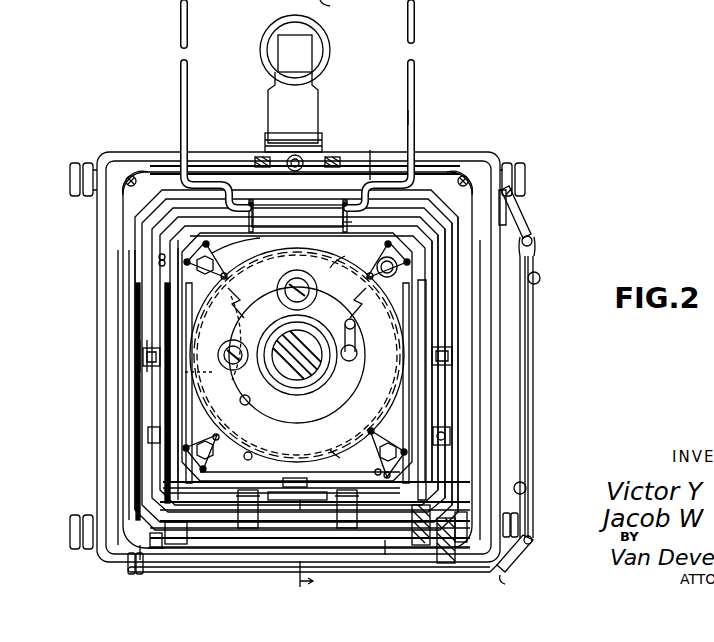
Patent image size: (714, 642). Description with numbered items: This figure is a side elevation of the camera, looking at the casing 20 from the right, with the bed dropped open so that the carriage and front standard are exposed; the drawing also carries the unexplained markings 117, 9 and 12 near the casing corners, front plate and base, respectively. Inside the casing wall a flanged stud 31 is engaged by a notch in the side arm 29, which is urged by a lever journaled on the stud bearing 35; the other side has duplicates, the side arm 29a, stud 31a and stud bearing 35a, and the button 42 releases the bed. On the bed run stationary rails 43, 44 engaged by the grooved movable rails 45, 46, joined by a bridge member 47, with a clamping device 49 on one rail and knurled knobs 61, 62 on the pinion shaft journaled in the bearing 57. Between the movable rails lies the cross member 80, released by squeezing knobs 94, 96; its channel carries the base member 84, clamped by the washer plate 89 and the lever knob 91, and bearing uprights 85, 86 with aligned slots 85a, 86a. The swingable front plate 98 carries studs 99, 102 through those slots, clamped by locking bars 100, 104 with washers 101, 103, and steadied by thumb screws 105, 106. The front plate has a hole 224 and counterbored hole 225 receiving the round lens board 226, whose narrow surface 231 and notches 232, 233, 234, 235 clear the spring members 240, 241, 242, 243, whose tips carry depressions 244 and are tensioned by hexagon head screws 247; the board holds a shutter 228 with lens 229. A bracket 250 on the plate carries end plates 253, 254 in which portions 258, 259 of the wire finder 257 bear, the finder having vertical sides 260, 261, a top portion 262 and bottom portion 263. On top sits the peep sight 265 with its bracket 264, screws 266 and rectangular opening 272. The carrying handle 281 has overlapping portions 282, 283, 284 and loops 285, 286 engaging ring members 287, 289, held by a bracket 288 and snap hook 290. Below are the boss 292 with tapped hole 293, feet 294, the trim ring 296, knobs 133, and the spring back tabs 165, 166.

The camera casing 20 is at (131, 153).
The screw 117 is at (134, 178).
The metallic knobs 133 is at (75, 165).
The extended web or tab 165 is at (100, 303).
The extended web or tab 166 is at (98, 443).
The plate 9 is at (372, 295).
The depressions 244 is at (252, 317).
The notch 232 is at (290, 263).
The lens 229 is at (332, 373).
The hexagon head screws 247 is at (236, 307).
The shutter 228 is at (357, 328).
The notch 233 is at (358, 353).
The notch 235 is at (244, 399).
The slot 85a is at (206, 379).
The round lens board 226 is at (331, 269).
The spring member 240 is at (213, 255).
The notch 234 is at (340, 459).
The narrow surface 231 is at (214, 285).
The spring member 241 is at (404, 281).
The spring member 243 is at (195, 442).
The hole 224 is at (381, 446).
The counterbored hole 225 is at (247, 458).
The spring member 242 is at (375, 472).
The round end plate 253 is at (262, 225).
The round end plate 254 is at (352, 224).
The button 42 is at (287, 161).
The bracket 250 is at (306, 161).
The peep sight 265 is at (340, 52).
The rectangular opening 272 is at (290, 53).
The horizontal top portion 262 is at (333, 7).
The bracket 264 is at (318, 141).
The screws 266 is at (300, 129).
The horizontal bottom portion 263 is at (370, 154).
The vertical side 260 is at (188, 93).
The vertical side 261 is at (408, 99).
The wire finder 257 is at (425, 123).
The portion 259 is at (253, 202).
The portion 258 is at (346, 201).
The bracket 288 is at (530, 201).
The ring member 287 is at (521, 219).
The loop 285 is at (538, 237).
The boss 292 is at (541, 279).
The straight overlapping portion 282 is at (535, 301).
The straight overlapping portion 283 is at (527, 319).
The straight overlapping portion 284 is at (529, 337).
The carrying handle 281 is at (536, 359).
The tapped hole 293 is at (527, 489).
The loop 286 is at (532, 537).
The ring member 289 is at (522, 569).
The snap hook 290 is at (505, 585).
The swingable front plate 98 is at (412, 299).
The slot 86a is at (426, 306).
The washer 103 is at (436, 321).
The locking bar 104 is at (444, 334).
The second stud 102 is at (452, 346).
The flanged stud 31a is at (454, 361).
The side arm 29a is at (460, 391).
The stud bearing 35a is at (465, 407).
The upright member 86 is at (451, 431).
The second thumb screw 106 is at (451, 441).
The stud 99 is at (150, 346).
The flanged stud 31 is at (142, 357).
The short bar 100 is at (150, 364).
The washer 101 is at (152, 371).
The stud bearing 35 is at (133, 406).
The side arm 29 is at (140, 433).
The upright member 85 is at (168, 411).
The thumb screw 105 is at (178, 426).
The bridge member 47 is at (228, 539).
The knob 96 is at (240, 513).
The knob 94 is at (340, 513).
The cross member 80 is at (287, 518).
The washer plate 89 is at (300, 501).
The knob 91 is at (284, 480).
The section line 12 is at (320, 577).
The base member 84 is at (386, 549).
The second movable rail 46 is at (405, 566).
The stationary rail 44 is at (436, 571).
The knurled knob 62 is at (465, 571).
The bearing 57 is at (462, 551).
The movable rail 45 is at (175, 553).
The stationary rail 43 is at (160, 556).
The knurled knob 61 is at (152, 561).
The clamping device 49 is at (140, 557).
The outer boundary 296 is at (262, 579).
The feet 294 is at (447, 6).